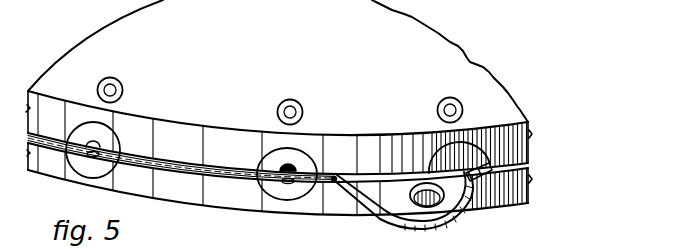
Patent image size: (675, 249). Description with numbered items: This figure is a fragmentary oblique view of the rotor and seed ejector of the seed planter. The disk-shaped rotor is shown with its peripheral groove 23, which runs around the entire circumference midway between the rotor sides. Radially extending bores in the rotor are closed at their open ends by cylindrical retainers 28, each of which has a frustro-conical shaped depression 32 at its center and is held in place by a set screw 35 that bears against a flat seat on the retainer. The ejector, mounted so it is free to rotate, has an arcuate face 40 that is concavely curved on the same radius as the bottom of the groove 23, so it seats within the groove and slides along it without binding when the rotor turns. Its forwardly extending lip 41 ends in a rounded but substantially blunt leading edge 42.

The groove 23 is at (178, 167).
The retainer 28 is at (295, 190).
The frustro-conical shaped depression 32 is at (293, 168).
The set screw 35 is at (289, 98).
The arcuate face 40 is at (458, 215).
The forwardly extending lip 41 is at (376, 210).
The leading edge 42 is at (332, 183).